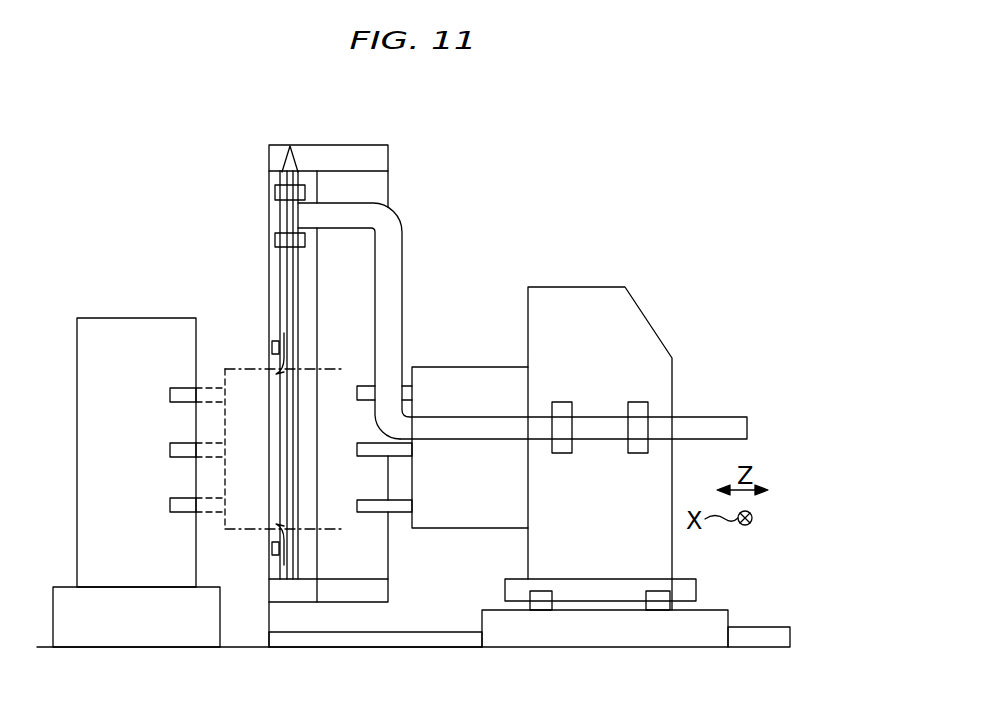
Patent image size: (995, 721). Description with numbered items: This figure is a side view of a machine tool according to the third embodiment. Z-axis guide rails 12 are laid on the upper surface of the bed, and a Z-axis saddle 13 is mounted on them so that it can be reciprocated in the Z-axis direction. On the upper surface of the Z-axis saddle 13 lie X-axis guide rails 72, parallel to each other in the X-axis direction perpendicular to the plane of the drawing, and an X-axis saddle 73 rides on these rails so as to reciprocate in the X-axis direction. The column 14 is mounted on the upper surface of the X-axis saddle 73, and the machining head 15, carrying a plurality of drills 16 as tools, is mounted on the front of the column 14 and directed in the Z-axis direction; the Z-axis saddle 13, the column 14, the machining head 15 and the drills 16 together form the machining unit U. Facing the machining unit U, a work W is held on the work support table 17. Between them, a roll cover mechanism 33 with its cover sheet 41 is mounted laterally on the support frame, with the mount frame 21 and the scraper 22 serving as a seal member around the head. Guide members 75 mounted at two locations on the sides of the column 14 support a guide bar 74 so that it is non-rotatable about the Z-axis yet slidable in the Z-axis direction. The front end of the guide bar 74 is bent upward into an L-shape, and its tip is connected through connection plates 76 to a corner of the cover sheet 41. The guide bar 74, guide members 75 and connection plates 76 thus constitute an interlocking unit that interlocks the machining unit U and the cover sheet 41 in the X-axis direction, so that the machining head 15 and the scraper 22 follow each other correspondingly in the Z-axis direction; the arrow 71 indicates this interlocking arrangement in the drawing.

The work W is at (77, 386).
The machining unit U is at (646, 274).
The Z-axis guide rails 12 is at (348, 648).
The Z-axis saddle 13 is at (627, 632).
The column 14 is at (643, 318).
The machining head 15 is at (245, 532).
The drills 16 is at (357, 457).
The work support table 17 is at (137, 648).
The mount frame 21 is at (278, 338).
The scraper 22 is at (274, 360).
The roll cover mechanism 33 is at (368, 137).
The cover sheet 41 is at (288, 276).
The feed mechanism 71 is at (470, 246).
The X-axis guide rails 72 is at (655, 592).
The X-axis saddle 73 is at (697, 590).
The guide bar 74 is at (397, 278).
The guide members 75 is at (640, 455).
The connection plates 76 is at (290, 146).